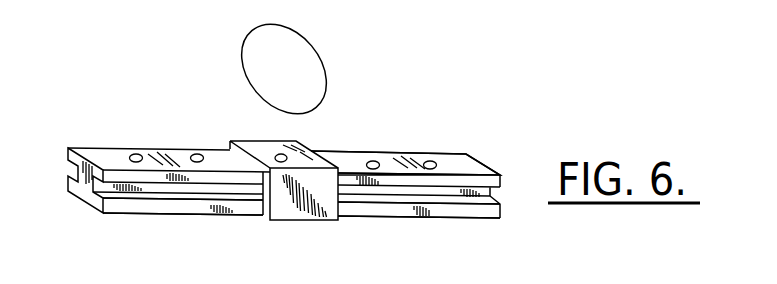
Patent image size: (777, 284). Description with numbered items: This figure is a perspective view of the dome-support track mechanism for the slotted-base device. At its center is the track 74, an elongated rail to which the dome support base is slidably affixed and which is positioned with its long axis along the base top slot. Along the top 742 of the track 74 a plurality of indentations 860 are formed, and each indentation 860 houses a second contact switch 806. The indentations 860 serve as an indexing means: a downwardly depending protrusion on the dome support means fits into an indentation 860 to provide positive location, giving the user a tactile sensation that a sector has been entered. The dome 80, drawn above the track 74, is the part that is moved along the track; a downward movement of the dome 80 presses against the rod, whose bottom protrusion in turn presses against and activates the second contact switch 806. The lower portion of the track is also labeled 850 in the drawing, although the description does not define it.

The track 74 is at (70, 143).
The top of the track 742 is at (459, 143).
The lower rail flange 850 is at (98, 219).
The indentation 860 is at (140, 146).
The second contact switch 806 is at (381, 172).
The dome 80 is at (295, 44).